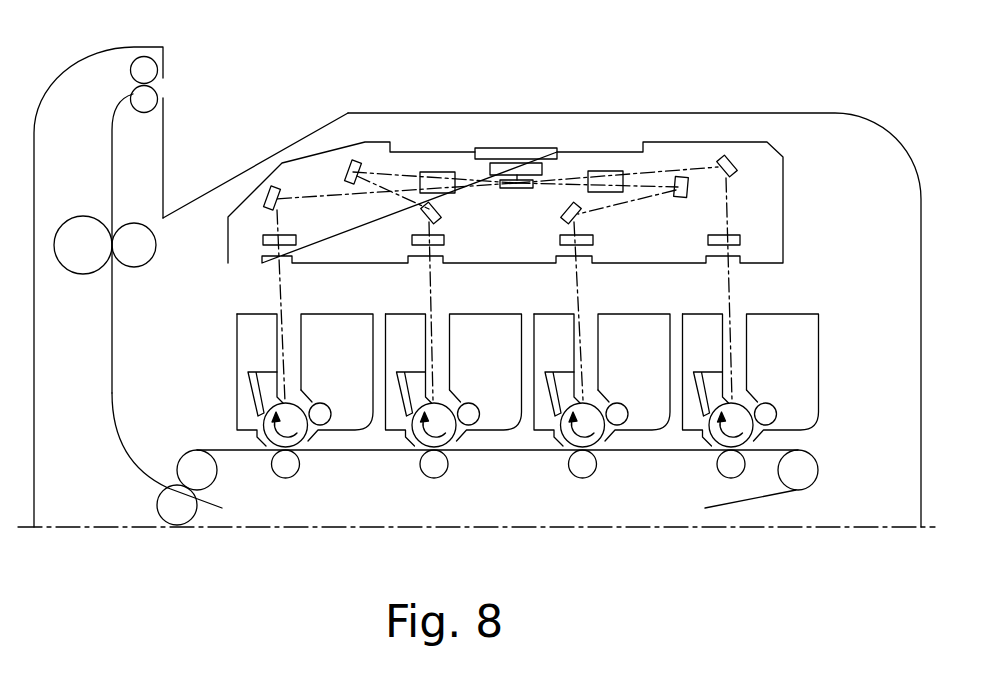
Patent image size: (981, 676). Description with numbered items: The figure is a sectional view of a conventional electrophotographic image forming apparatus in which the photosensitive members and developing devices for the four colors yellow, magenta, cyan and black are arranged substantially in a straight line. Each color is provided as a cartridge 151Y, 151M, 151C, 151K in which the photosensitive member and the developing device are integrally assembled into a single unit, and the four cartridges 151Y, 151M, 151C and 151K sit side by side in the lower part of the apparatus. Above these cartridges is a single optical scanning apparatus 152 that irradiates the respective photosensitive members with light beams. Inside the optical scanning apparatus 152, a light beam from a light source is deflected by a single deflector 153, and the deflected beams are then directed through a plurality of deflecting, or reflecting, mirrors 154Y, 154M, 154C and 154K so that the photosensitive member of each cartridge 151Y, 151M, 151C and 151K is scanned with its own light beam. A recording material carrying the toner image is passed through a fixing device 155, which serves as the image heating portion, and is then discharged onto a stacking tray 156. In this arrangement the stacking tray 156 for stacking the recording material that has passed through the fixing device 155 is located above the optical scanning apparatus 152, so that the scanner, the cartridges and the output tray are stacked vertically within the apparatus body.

The cartridge 151Y is at (330, 314).
The cartridge 151M is at (478, 314).
The cartridge 151C is at (627, 314).
The cartridge 151K is at (790, 314).
The optical scanning apparatus 152 is at (672, 142).
The deflector 153 is at (533, 156).
The deflecting mirror 154Y is at (267, 212).
The deflecting mirror 154M is at (348, 162).
The deflecting mirror 154C is at (558, 206).
The deflecting mirror 154K is at (733, 156).
The fixing device 155 is at (68, 226).
The stacking tray 156 is at (257, 166).